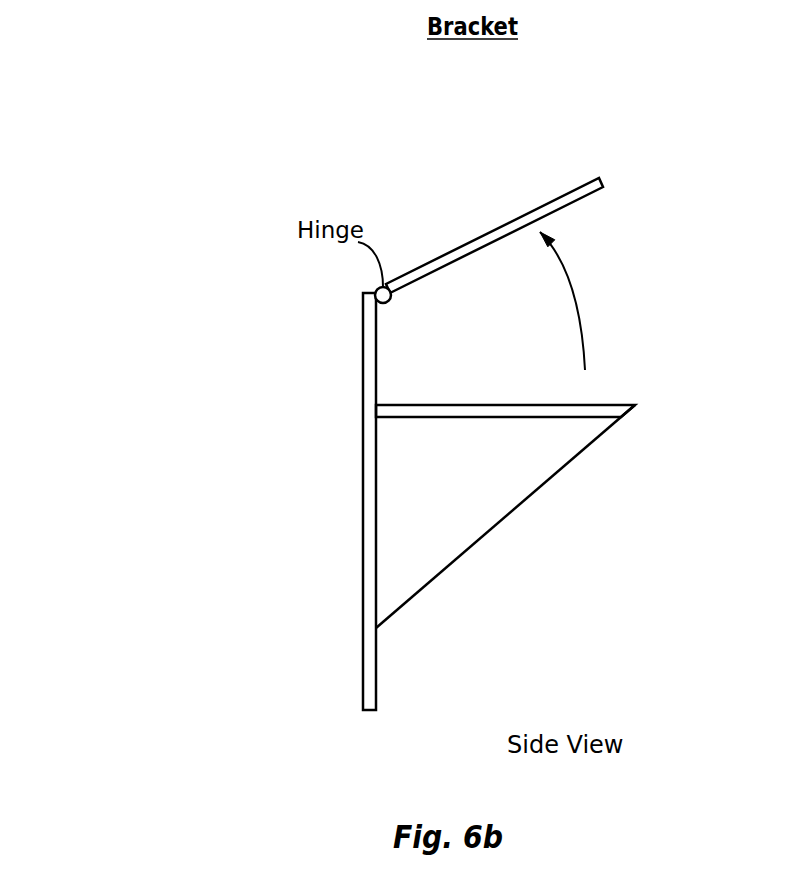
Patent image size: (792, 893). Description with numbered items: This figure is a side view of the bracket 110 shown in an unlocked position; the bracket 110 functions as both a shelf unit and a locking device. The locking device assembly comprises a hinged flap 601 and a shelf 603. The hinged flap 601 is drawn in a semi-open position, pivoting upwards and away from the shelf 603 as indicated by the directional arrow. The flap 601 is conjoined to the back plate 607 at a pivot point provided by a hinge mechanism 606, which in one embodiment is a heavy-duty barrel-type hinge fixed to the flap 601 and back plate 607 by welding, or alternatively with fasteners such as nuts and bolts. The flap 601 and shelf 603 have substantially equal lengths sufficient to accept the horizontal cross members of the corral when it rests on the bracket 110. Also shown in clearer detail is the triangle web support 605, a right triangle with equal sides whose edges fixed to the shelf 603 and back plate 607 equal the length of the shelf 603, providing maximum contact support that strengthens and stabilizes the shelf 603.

The bracket 110 is at (145, 147).
The hinged flap 601 is at (568, 183).
The shelf 603 is at (587, 405).
The triangle web support 605 is at (592, 437).
The hinge mechanism 606 is at (383, 303).
The back plate 607 is at (363, 640).